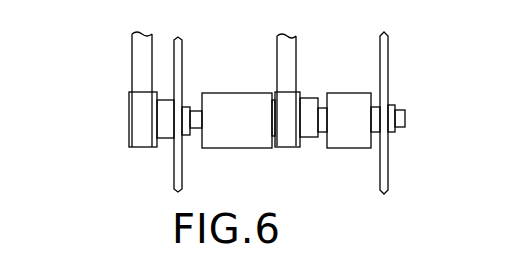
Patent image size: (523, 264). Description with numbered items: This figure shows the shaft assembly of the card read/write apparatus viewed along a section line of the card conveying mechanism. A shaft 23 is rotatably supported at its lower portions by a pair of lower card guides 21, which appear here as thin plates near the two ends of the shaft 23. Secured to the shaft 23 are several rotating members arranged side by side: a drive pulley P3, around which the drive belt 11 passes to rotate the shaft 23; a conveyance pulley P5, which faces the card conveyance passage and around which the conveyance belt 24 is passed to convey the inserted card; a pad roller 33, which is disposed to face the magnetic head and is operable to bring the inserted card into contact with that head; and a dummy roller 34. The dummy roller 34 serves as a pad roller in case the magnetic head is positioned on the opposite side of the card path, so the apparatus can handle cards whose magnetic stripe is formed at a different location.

The drive belt 11 is at (145, 60).
The lower card guides 21 is at (182, 58).
The drive pulley P3 is at (129, 141).
The shaft 23 is at (190, 132).
The dummy roller 34 is at (240, 137).
The conveyance belt 24 is at (292, 65).
The conveyance pulley P5 is at (300, 97).
The pad roller 33 is at (330, 146).